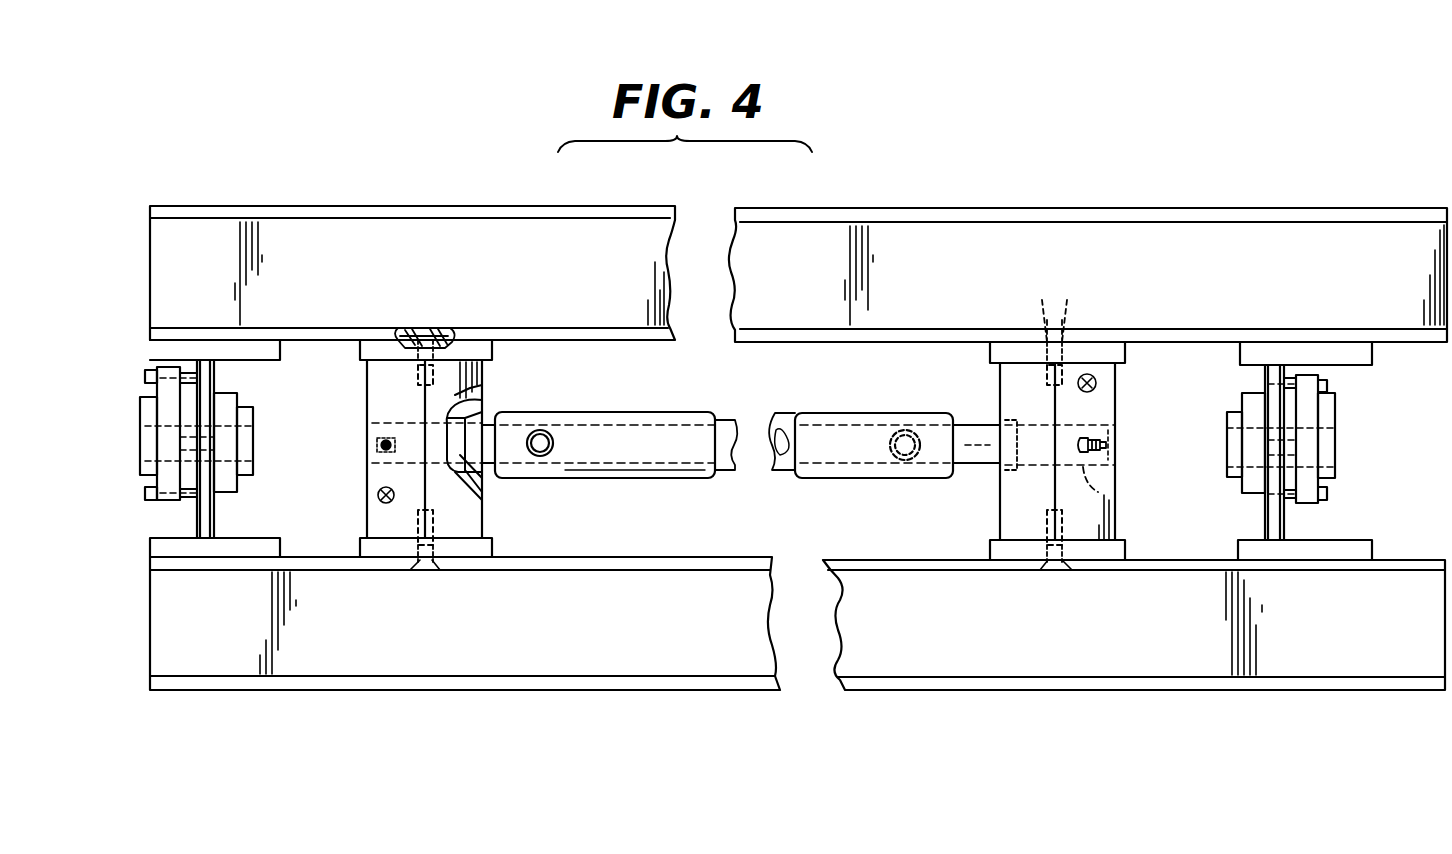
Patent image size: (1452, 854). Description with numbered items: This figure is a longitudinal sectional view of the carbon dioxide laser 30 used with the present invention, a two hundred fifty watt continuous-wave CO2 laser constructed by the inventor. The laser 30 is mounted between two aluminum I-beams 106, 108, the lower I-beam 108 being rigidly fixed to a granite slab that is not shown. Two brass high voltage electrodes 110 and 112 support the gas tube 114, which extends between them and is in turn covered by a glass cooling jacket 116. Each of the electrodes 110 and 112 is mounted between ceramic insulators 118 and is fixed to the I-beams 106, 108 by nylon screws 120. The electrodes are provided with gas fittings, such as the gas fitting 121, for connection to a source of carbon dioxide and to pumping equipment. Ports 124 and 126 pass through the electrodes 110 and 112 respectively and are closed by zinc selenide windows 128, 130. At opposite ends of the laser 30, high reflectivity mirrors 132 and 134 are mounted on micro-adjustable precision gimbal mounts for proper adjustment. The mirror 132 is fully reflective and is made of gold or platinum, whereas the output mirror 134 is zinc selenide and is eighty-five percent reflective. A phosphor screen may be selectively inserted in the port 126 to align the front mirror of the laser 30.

The laser 30 is at (296, 182).
The I-beam 106 is at (1128, 205).
The I-beam 108 is at (990, 683).
The high voltage electrode 110 is at (478, 412).
The high voltage electrode 112 is at (1117, 390).
The gas tube 114 is at (732, 428).
The glass cooling jacket 116 is at (863, 412).
The ceramic insulators 118 is at (380, 352).
The nylon screws 120 is at (428, 325).
The gas fitting 121 is at (1106, 442).
The port 124 is at (400, 420).
The port 126 is at (1105, 495).
The zinc selenide window 128 is at (378, 444).
The zinc selenide window 130 is at (1116, 452).
The high reflectivity mirror 132 is at (150, 392).
The high reflectivity mirror 134 is at (1340, 408).